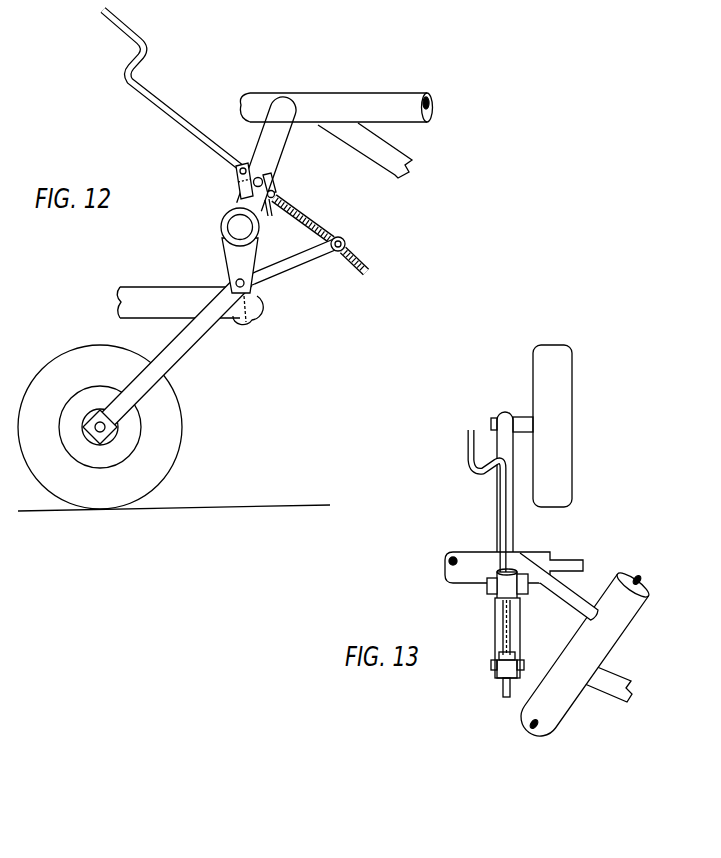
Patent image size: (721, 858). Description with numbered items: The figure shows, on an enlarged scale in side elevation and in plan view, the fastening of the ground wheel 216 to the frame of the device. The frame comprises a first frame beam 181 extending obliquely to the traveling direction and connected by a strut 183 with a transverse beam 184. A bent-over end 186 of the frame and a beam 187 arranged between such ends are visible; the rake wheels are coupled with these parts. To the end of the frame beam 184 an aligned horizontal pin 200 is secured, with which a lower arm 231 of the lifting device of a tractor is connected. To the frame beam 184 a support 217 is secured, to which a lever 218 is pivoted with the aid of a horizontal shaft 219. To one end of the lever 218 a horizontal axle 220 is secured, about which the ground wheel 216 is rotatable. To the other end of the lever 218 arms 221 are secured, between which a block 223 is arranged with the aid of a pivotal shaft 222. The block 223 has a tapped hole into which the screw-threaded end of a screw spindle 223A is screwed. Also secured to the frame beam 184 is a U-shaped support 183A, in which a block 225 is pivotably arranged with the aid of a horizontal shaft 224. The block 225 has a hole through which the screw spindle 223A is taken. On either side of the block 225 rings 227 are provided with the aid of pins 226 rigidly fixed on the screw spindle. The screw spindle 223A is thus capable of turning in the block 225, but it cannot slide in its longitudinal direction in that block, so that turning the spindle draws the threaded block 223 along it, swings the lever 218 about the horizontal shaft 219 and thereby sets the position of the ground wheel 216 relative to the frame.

In FIG. 12, the first frame beam 181 is at (401, 98).
In FIG. 13, the first frame beam 181 is at (618, 612).
In FIG. 12, the strut 183 is at (279, 143).
In FIG. 13, the strut 183 is at (570, 598).
In FIG. 12, the U-shaped support 183A is at (233, 213).
In FIG. 13, the U-shaped support 183A is at (500, 601).
In FIG. 12, the transverse beam 184 is at (221, 233).
In FIG. 13, the transverse beam 184 is at (462, 558).
In FIG. 12, the bent-over end 186 is at (400, 156).
In FIG. 13, the beam 187 is at (612, 691).
In FIG. 12, the horizontal pin 200 is at (244, 319).
In FIG. 13, the horizontal pin 200 is at (575, 567).
In FIG. 12, the ground wheel 216 is at (89, 356).
In FIG. 13, the ground wheel 216 is at (565, 362).
In FIG. 12, the support 217 is at (232, 255).
In FIG. 12, the lever 218 is at (187, 344).
In FIG. 13, the lever 218 is at (503, 418).
In FIG. 12, the horizontal shaft 219 is at (249, 286).
In FIG. 12, the horizontal axle 220 is at (97, 429).
In FIG. 13, the horizontal axle 220 is at (524, 425).
In FIG. 12, the arms 221 is at (320, 258).
In FIG. 13, the arms 221 is at (496, 638).
In FIG. 12, the pivotal shaft 222 is at (341, 242).
In FIG. 13, the pivotal shaft 222 is at (493, 665).
In FIG. 12, the block 223 is at (353, 258).
In FIG. 13, the block 223 is at (505, 673).
In FIG. 12, the screw spindle 223A is at (167, 106).
In FIG. 13, the screw spindle 223A is at (506, 491).
In FIG. 12, the horizontal shaft 224 is at (238, 178).
In FIG. 13, the horizontal shaft 224 is at (488, 590).
In FIG. 12, the block 225 is at (268, 185).
In FIG. 13, the block 225 is at (521, 598).
In FIG. 12, the pins 226 is at (276, 198).
In FIG. 12, the rings 227 is at (269, 206).
In FIG. 12, the lower arm 231 is at (140, 289).